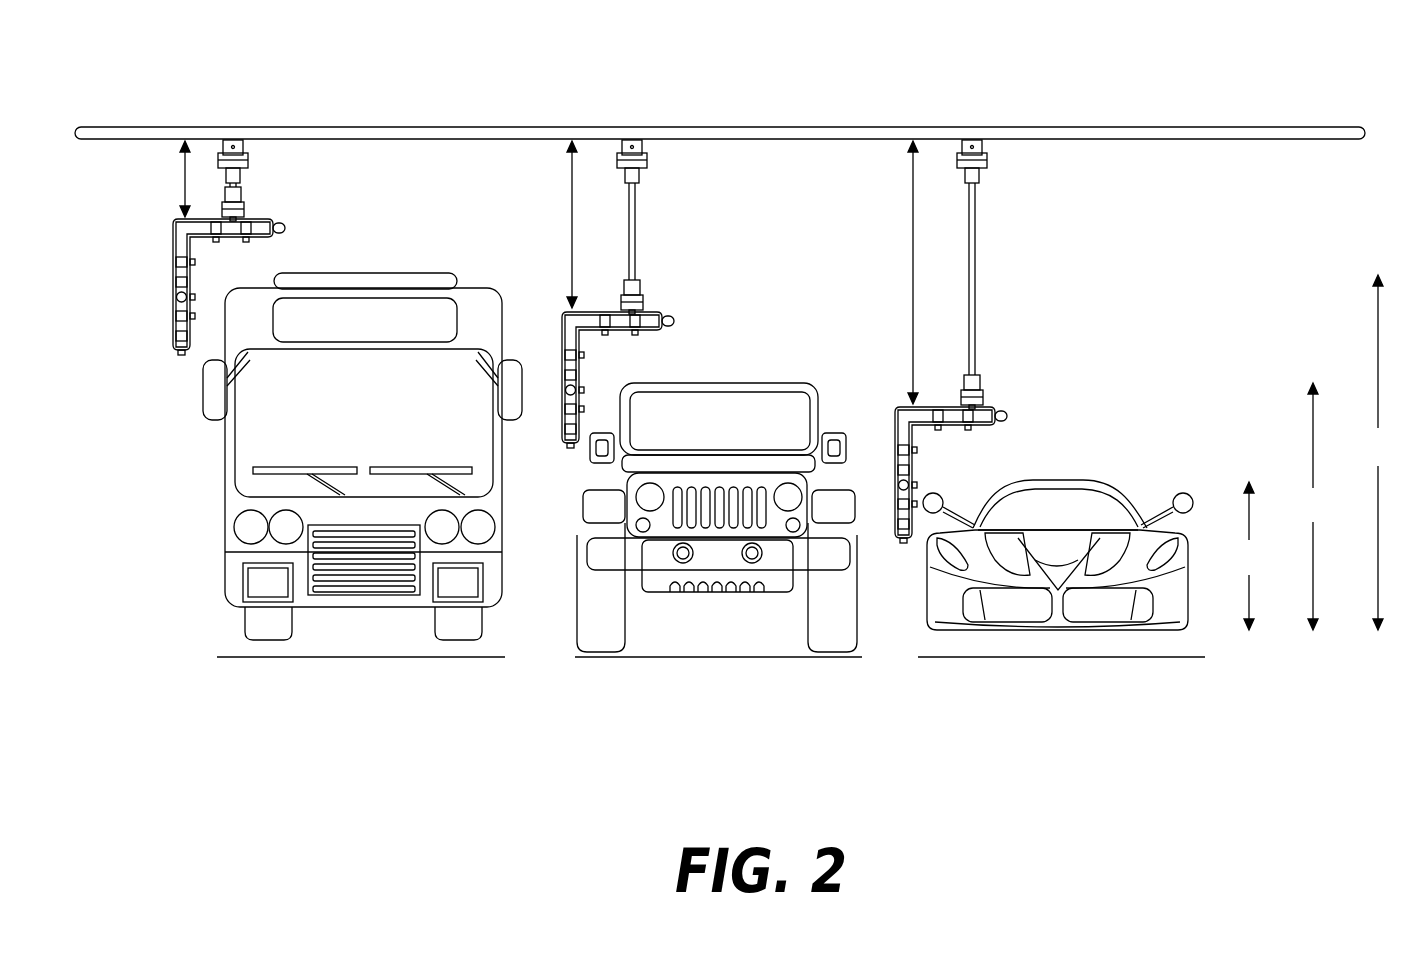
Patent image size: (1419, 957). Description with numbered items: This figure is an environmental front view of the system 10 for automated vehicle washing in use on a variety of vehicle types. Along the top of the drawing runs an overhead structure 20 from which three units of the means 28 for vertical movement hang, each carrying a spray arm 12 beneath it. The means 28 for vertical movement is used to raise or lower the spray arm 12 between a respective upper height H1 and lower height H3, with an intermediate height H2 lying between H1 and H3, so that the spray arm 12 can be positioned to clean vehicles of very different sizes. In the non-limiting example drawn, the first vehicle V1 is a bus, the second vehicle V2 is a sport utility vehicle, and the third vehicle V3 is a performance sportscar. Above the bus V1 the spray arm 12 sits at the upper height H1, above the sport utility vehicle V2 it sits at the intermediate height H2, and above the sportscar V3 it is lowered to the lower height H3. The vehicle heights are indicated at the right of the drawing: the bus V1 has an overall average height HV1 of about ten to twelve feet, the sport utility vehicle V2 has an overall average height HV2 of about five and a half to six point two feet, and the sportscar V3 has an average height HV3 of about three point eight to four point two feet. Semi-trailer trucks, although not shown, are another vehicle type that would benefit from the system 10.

The system for automated vehicle washing 10 is at (134, 88).
The overhead support rail 20 is at (1081, 127).
The means for vertical movement 28 is at (249, 163).
The spray arm 12 is at (173, 317).
The upper height H1 is at (185, 173).
The intermediate height H2 is at (572, 221).
The lower height H3 is at (913, 261).
The vehicle V1 is at (320, 273).
The vehicle V2 is at (704, 383).
The vehicle V3 is at (1062, 480).
The overall average height HV1 is at (1382, 452).
The overall average height HV2 is at (1318, 506).
The average height HV3 is at (1254, 556).